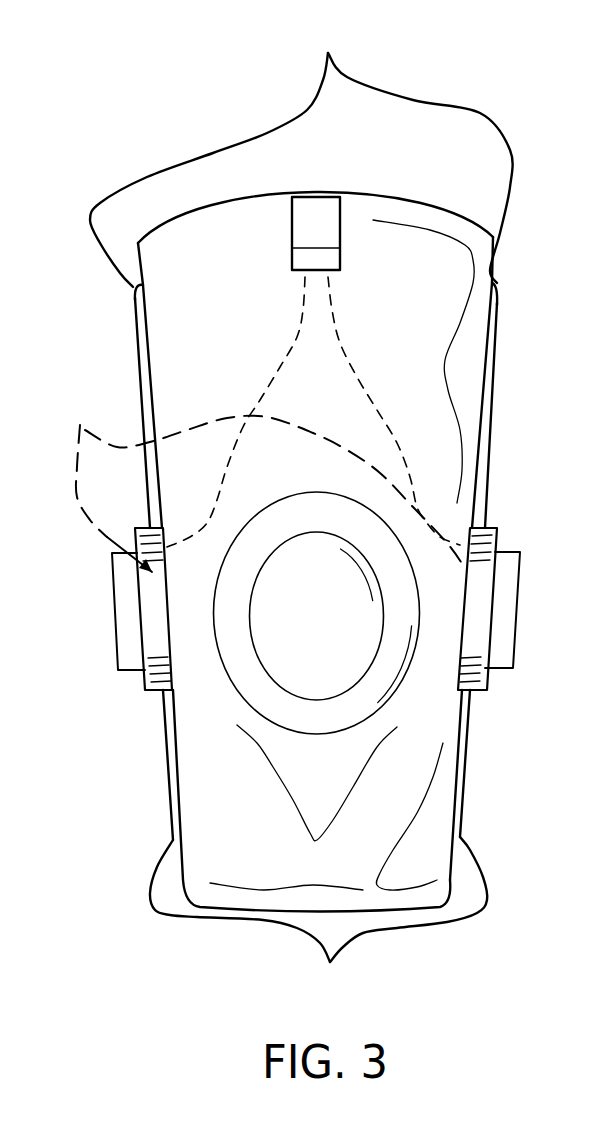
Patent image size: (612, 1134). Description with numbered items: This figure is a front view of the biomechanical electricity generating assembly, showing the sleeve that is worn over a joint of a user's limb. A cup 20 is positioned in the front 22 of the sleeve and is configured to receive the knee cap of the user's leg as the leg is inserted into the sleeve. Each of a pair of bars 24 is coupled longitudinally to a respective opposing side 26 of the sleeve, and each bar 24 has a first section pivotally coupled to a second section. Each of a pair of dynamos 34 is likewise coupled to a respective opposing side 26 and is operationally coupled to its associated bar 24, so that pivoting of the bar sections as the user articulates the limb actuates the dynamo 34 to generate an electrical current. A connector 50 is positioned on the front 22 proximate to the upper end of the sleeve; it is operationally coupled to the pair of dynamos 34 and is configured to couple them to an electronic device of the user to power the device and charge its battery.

The cup 20 is at (290, 655).
The front 22 is at (403, 273).
The bar 24 is at (318, 922).
The opposing side 26 is at (301, 149).
The dynamo 34 is at (85, 430).
The connector 50 is at (318, 217).